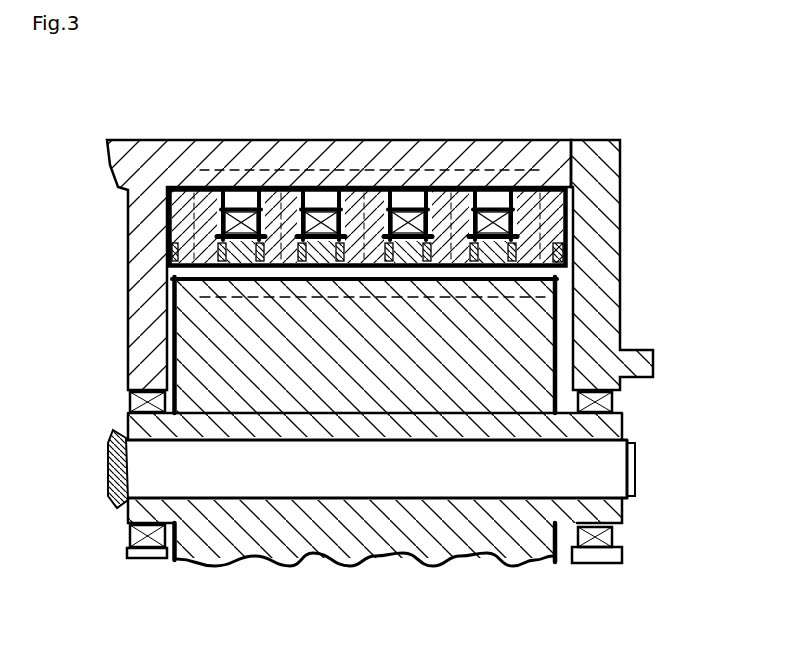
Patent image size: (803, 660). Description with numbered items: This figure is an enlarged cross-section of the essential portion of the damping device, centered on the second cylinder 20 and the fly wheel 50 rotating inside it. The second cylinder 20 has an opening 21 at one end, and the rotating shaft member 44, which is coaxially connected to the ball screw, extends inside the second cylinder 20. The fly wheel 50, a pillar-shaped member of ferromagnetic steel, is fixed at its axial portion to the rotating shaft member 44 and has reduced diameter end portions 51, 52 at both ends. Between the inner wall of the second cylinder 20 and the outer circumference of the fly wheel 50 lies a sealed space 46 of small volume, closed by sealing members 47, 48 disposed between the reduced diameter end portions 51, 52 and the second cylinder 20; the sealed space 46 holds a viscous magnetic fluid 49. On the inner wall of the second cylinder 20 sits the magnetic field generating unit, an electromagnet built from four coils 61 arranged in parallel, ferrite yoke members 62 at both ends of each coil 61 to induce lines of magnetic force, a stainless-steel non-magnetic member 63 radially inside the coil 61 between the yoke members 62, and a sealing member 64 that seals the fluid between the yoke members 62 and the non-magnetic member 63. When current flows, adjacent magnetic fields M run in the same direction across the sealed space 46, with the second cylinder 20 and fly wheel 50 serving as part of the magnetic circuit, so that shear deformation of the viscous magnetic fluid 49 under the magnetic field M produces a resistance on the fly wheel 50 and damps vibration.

The second cylinder 20 is at (162, 140).
The opening 21 is at (607, 233).
The rotating shaft member 44 is at (522, 483).
The sealed space 46 is at (547, 274).
The sealing member 47 is at (130, 400).
The sealing member 48 is at (613, 403).
The viscous magnetic fluid 49 is at (482, 296).
The fly wheel 50 is at (180, 322).
The reduced diameter end portion 51 is at (122, 424).
The reduced diameter end portion 52 is at (623, 422).
The coil 61 is at (234, 200).
The yoke member 62 is at (256, 214).
The non-magnetic member 63 is at (333, 222).
The sealing member 64 is at (214, 243).
The magnetic field M is at (127, 195).